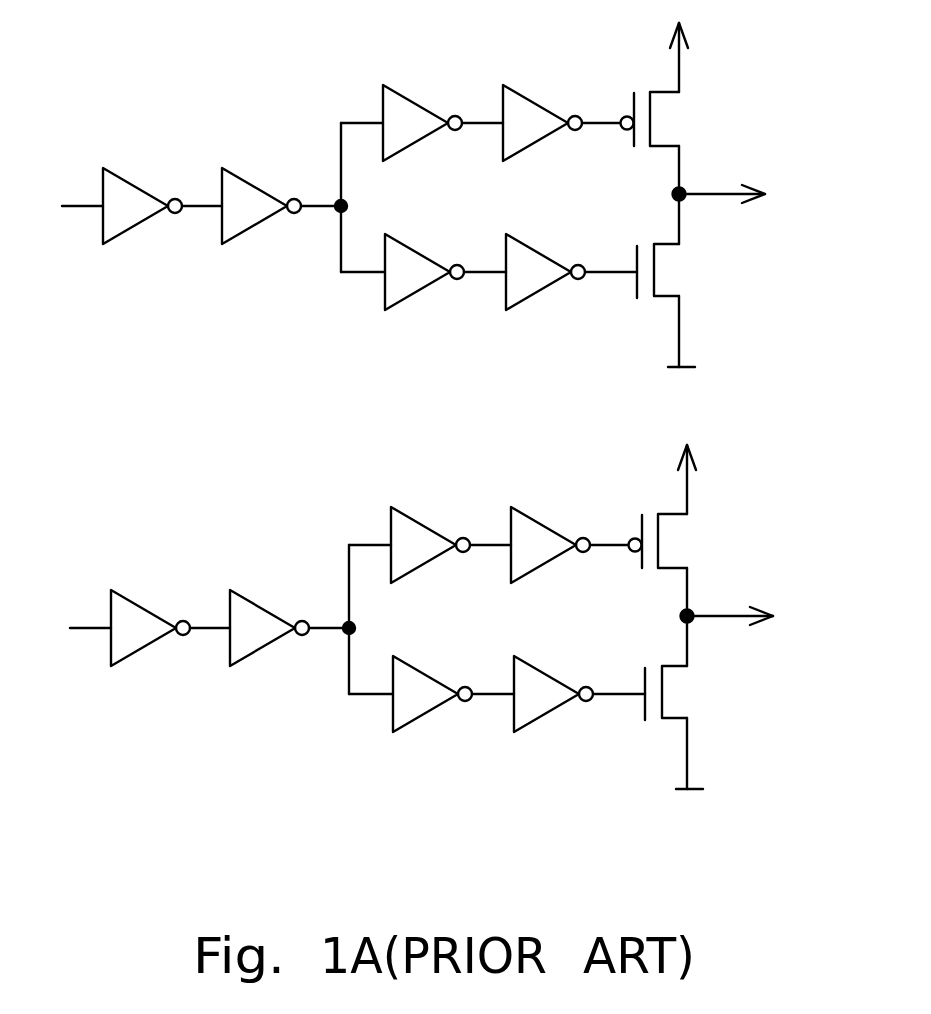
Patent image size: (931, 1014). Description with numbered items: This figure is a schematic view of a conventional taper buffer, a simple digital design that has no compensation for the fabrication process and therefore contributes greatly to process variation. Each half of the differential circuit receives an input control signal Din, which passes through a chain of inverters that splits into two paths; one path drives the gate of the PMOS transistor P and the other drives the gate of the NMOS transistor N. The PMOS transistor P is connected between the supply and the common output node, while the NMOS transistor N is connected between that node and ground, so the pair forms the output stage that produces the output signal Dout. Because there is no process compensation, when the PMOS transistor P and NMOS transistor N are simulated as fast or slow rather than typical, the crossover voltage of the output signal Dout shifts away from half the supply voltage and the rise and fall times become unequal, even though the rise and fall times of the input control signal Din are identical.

The input control signal Din is at (67, 419).
The output signal Dout is at (755, 404).
The PMOS transistor P is at (666, 295).
The NMOS transistor N is at (677, 516).